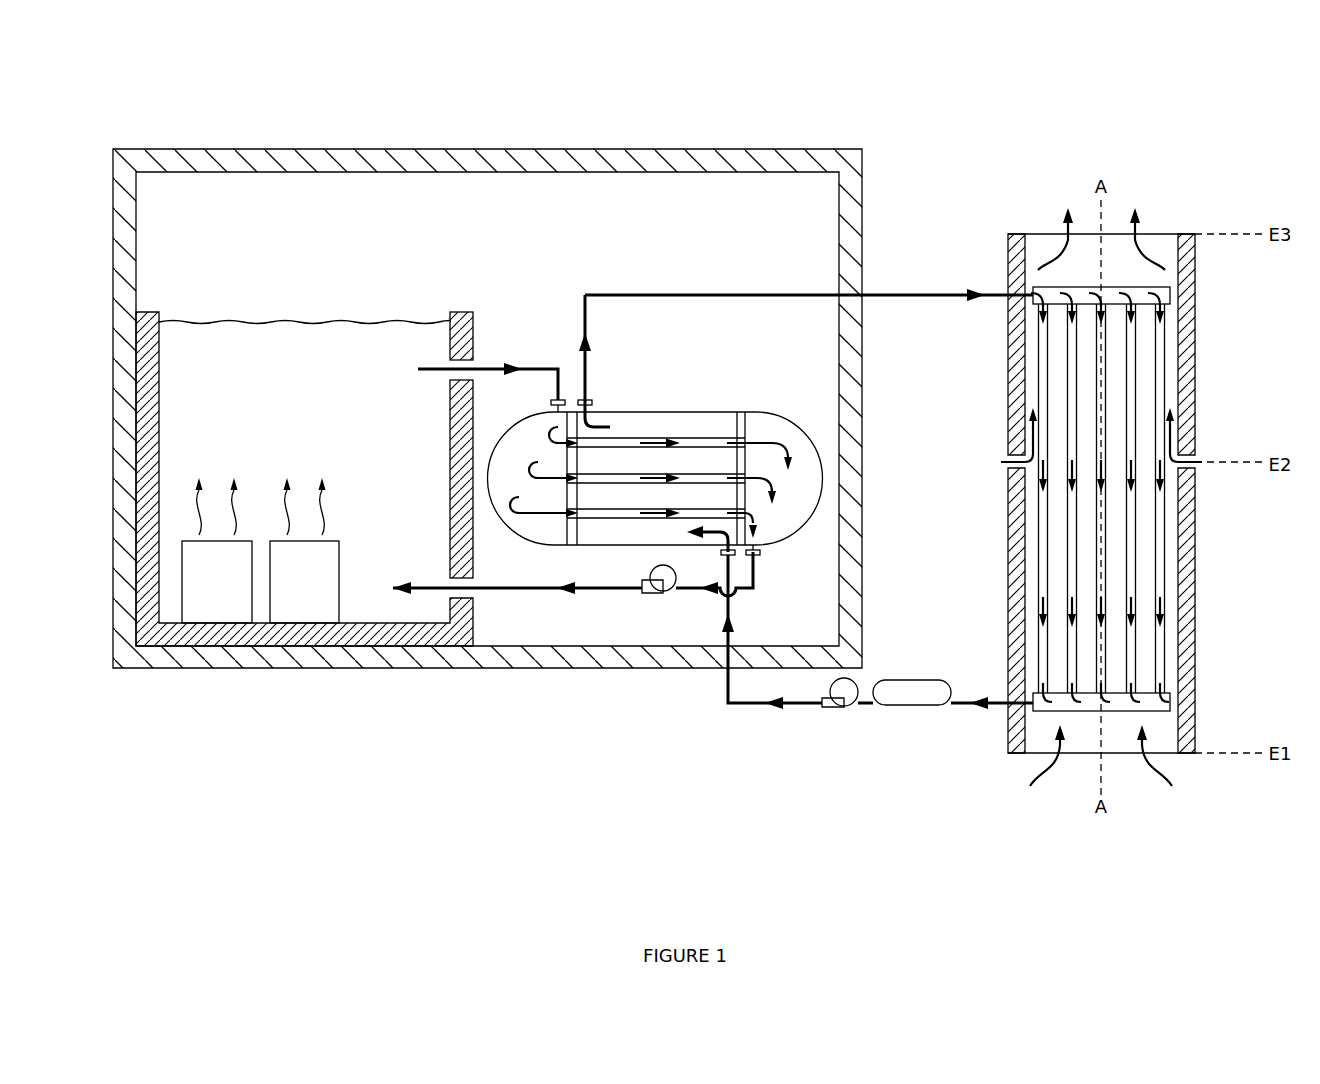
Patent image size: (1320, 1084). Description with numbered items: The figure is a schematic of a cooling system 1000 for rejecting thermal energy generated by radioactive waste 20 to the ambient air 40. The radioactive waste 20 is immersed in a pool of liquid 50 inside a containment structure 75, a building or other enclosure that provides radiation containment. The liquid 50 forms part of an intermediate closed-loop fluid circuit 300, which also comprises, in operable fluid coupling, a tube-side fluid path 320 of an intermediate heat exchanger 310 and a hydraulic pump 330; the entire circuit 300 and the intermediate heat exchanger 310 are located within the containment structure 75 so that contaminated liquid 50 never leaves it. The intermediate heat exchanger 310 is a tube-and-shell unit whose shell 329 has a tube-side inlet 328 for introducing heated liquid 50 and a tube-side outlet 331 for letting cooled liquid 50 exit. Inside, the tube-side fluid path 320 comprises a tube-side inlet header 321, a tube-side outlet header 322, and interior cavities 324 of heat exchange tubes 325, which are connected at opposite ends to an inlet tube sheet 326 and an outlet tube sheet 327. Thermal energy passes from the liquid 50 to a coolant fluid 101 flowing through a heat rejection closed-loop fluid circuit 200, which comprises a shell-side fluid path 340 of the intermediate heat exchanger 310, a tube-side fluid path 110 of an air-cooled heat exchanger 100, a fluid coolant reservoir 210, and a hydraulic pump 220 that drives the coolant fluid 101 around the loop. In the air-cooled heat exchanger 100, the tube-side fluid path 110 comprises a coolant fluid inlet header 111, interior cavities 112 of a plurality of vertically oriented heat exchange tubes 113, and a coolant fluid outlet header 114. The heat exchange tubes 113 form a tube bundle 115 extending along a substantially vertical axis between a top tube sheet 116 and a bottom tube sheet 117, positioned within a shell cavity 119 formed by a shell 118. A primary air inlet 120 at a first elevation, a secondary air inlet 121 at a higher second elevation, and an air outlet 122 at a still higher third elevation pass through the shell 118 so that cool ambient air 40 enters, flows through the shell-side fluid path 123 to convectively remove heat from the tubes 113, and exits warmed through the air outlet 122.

The cooling system 1000 is at (1130, 112).
The containment structure 75 is at (772, 140).
The liquid 50 is at (283, 432).
The radioactive waste 20 is at (203, 592).
The intermediate closed-loop fluid circuit 300 is at (508, 597).
The hydraulic pump 330 is at (653, 594).
The tube-side inlet 328 is at (548, 400).
The shell-side fluid path 340 is at (608, 417).
The heat rejection closed-loop fluid circuit 200 is at (892, 283).
The intermediate heat exchanger 310 is at (688, 400).
The tube-side inlet header 321 is at (536, 440).
The inlet tube sheet 326 is at (569, 537).
The outlet tube sheet 327 is at (744, 417).
The tube-side fluid path 320 is at (687, 440).
The heat exchange tubes 325 is at (617, 440).
The interior cavities 324 is at (633, 517).
The shell 329 is at (823, 488).
The tube-side outlet header 322 is at (760, 545).
The tube-side outlet 331 is at (760, 560).
The fluid coolant reservoir 210 is at (897, 707).
The hydraulic pump 220 is at (830, 708).
The ambient air 40 is at (1003, 201).
The air-cooled heat exchanger 100 is at (1102, 476).
The tube bundle 115 is at (1027, 508).
The heat exchange tubes 113 is at (1172, 600).
The shell 118 is at (1187, 403).
The shell cavity 119 is at (1195, 577).
The secondary air inlet 121 is at (1010, 460).
The coolant fluid inlet header 111 is at (1116, 287).
The coolant fluid outlet header 114 is at (1162, 708).
The tube-side fluid path 110 is at (1158, 497).
The interior cavities 112 is at (1159, 568).
The coolant fluid 101 is at (1160, 335).
The top tube sheet 116 is at (1060, 305).
The shell-side fluid path 123 is at (1057, 647).
The bottom tube sheet 117 is at (1168, 693).
The air outlet 122 is at (1172, 234).
The primary air inlet 120 is at (1163, 753).